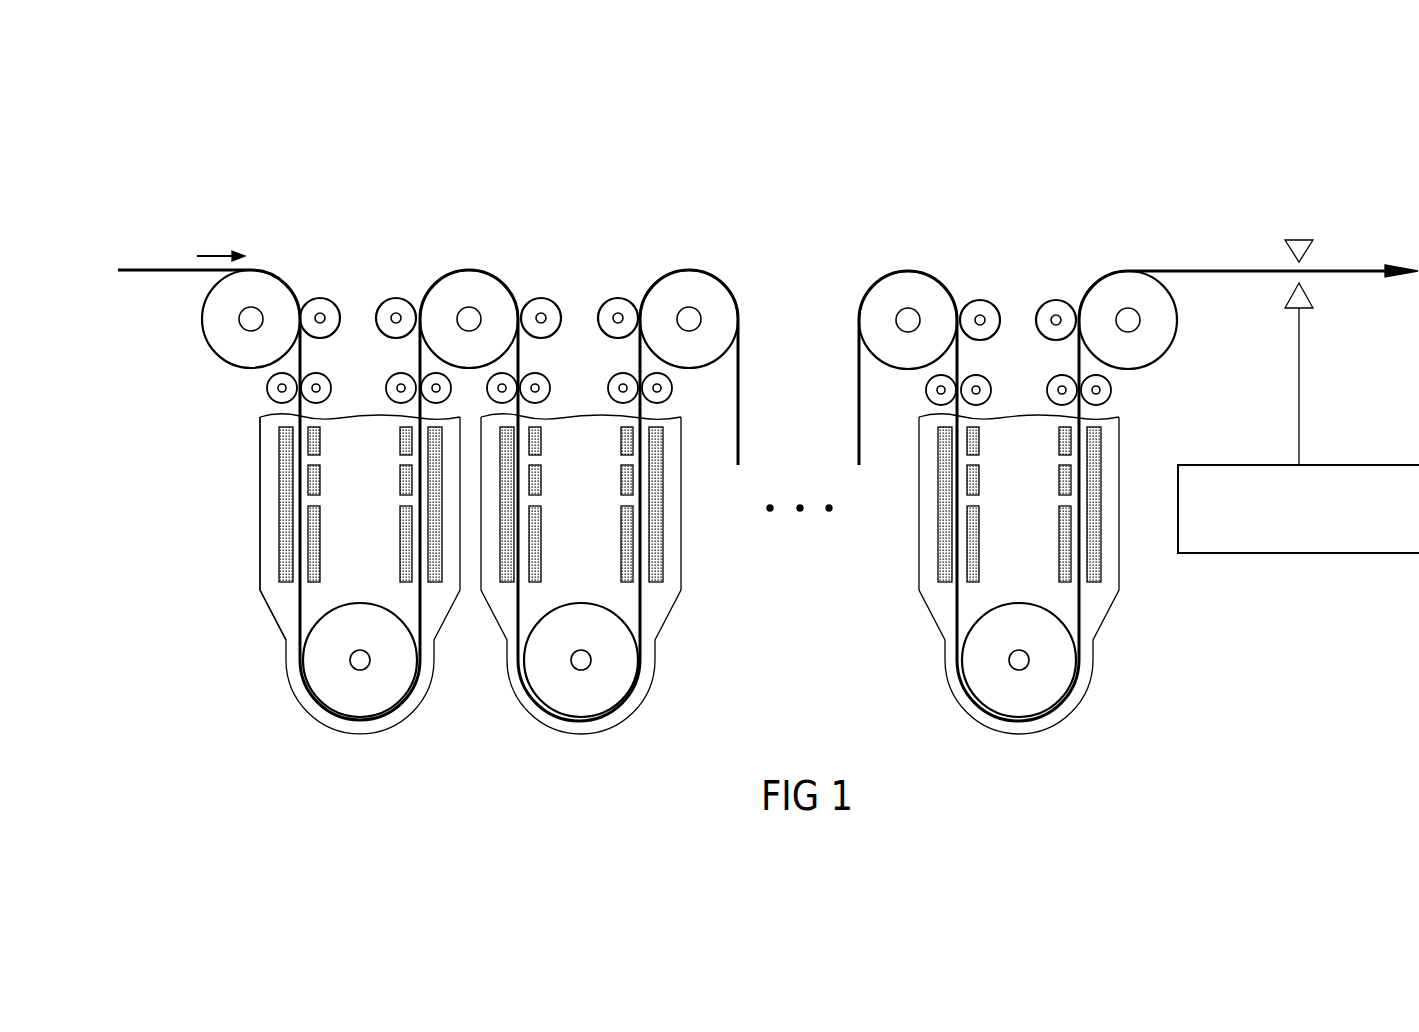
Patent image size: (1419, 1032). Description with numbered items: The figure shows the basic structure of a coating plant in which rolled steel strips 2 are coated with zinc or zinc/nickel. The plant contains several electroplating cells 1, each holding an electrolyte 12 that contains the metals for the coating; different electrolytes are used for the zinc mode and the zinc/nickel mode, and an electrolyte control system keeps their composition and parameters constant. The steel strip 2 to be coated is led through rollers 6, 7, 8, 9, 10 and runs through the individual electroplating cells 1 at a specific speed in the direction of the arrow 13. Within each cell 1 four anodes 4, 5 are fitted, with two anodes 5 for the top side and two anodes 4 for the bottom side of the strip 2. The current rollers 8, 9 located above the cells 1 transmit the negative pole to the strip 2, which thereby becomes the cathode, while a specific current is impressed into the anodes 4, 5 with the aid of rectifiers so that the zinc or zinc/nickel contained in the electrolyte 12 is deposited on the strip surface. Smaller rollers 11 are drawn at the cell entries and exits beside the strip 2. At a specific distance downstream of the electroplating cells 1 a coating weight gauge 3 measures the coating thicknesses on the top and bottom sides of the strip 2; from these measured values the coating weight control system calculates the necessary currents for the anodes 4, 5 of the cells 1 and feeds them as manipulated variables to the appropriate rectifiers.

The electroplating cell 1 is at (525, 708).
The steel strip 2 is at (1352, 272).
The coating weight gauge 3 is at (1262, 555).
The anode 4 is at (282, 503).
The anode 5 is at (325, 488).
The roller 6 is at (543, 302).
The roller 7 is at (618, 304).
The current roller 8 is at (688, 288).
The current roller 9 is at (900, 295).
The roller 10 is at (1043, 673).
The squeeze rollers 11 is at (1053, 390).
The electrolyte 12 is at (285, 607).
The arrow 13 is at (213, 253).